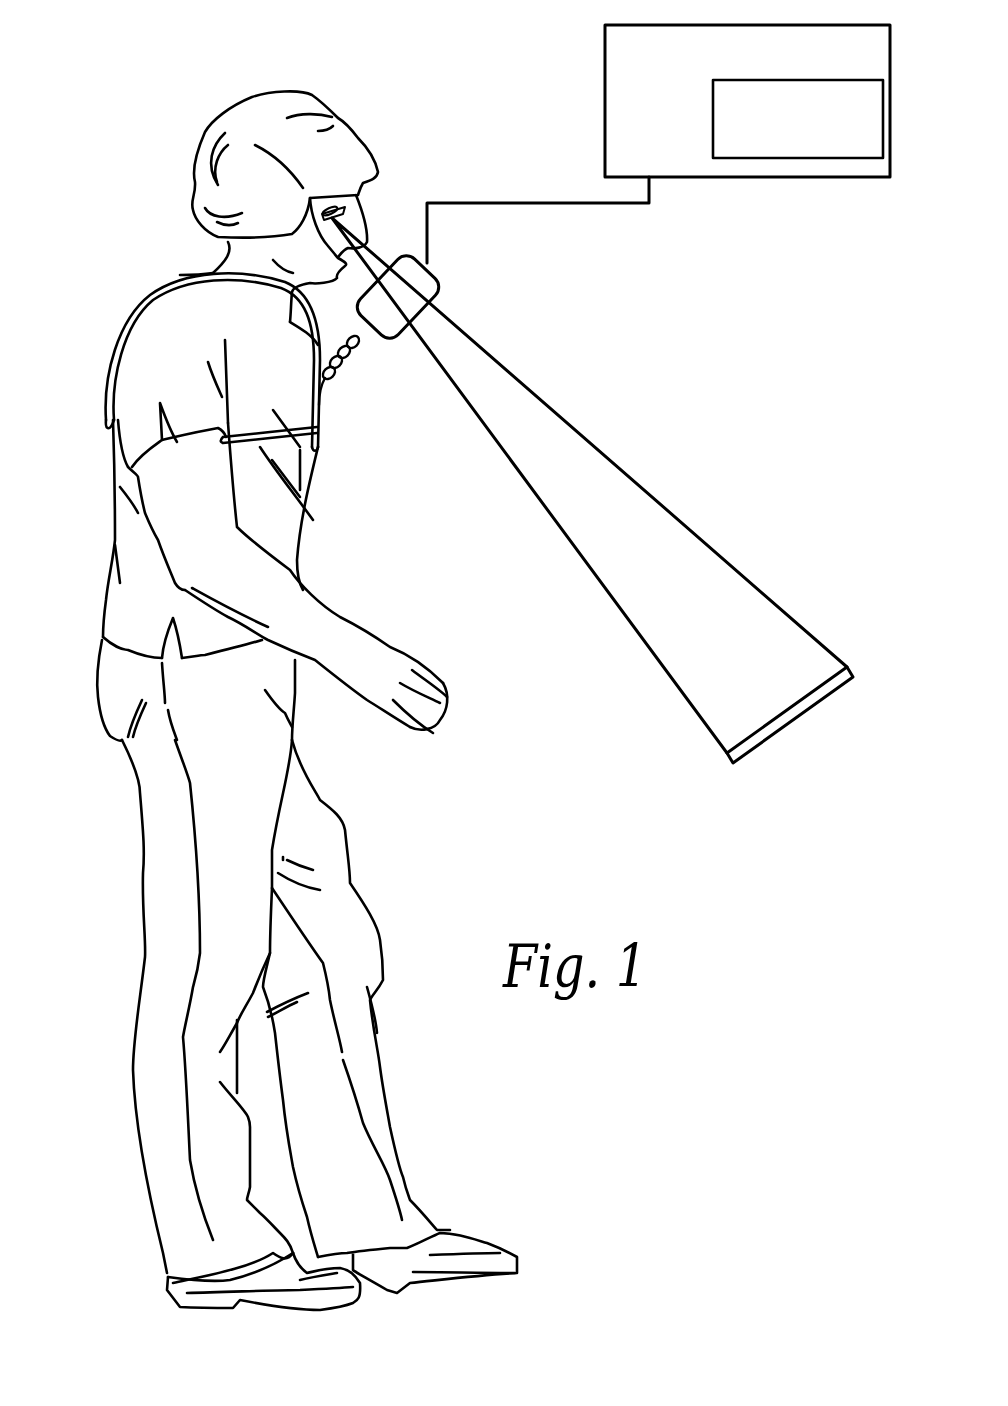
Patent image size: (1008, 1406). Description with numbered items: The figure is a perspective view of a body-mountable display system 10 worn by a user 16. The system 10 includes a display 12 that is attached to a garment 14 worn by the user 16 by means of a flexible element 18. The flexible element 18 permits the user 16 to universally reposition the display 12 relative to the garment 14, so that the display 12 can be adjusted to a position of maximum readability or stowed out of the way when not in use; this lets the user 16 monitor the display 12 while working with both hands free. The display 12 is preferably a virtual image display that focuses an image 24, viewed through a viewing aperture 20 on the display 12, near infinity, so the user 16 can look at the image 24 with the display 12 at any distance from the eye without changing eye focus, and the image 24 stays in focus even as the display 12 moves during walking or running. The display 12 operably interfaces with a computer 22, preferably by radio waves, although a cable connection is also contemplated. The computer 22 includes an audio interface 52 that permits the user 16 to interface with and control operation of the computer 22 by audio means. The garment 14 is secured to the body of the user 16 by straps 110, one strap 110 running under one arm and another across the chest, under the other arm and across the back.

The body-mountable display system 10 is at (389, 388).
The display 12 is at (433, 270).
The garment 14 is at (130, 310).
The user 16 is at (327, 69).
The flexible element 18 is at (377, 360).
The viewing aperture 20 is at (377, 243).
The computer 22 is at (720, 177).
The image 24 is at (767, 747).
The audio interface 52 is at (792, 158).
The strap 110 is at (277, 460).